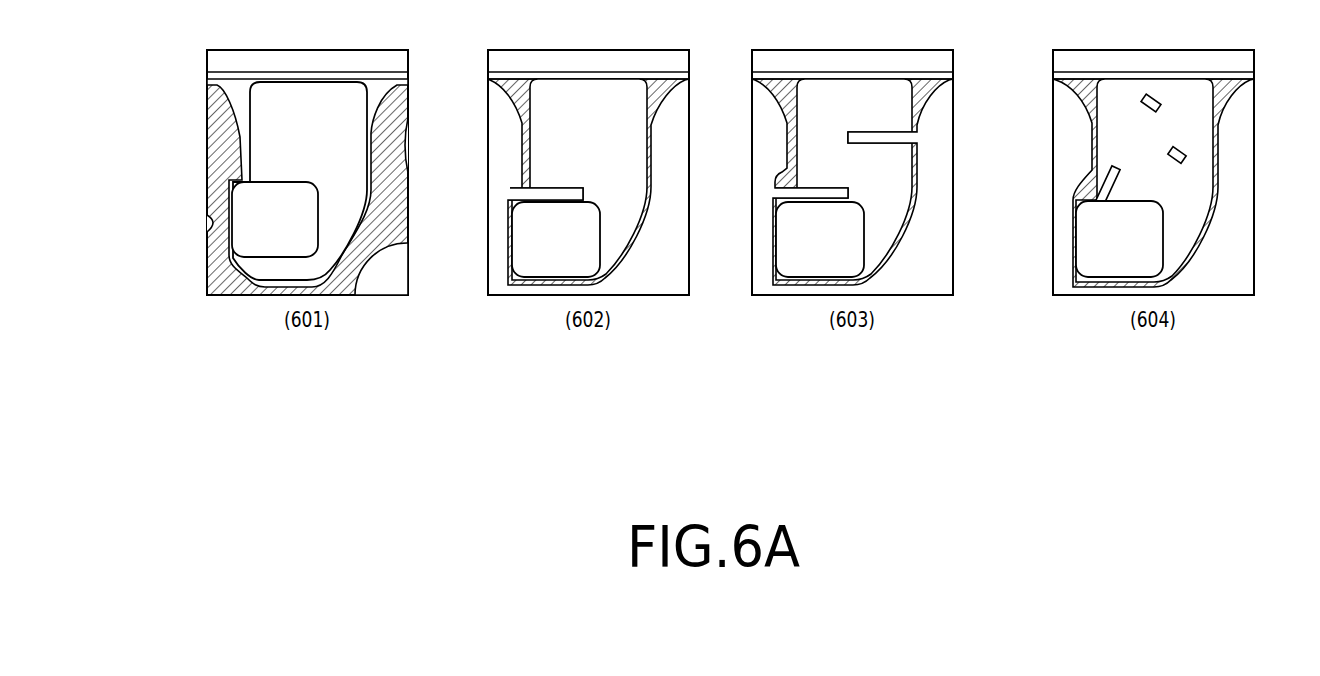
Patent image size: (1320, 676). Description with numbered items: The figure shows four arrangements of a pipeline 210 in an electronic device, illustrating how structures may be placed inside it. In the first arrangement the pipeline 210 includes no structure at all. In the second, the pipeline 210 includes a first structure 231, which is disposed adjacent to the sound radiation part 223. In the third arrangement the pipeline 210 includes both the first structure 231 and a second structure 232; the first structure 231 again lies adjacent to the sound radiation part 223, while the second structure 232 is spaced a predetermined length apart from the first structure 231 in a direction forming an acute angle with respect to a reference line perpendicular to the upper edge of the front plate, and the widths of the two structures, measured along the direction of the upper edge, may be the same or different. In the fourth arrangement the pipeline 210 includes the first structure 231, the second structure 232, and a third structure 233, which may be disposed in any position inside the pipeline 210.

The pipeline 210 is at (685, 180).
The sound radiation part 223 is at (650, 229).
The first structure 231 is at (903, 187).
The second structure 232 is at (1006, 145).
The third structure 233 is at (1219, 107).